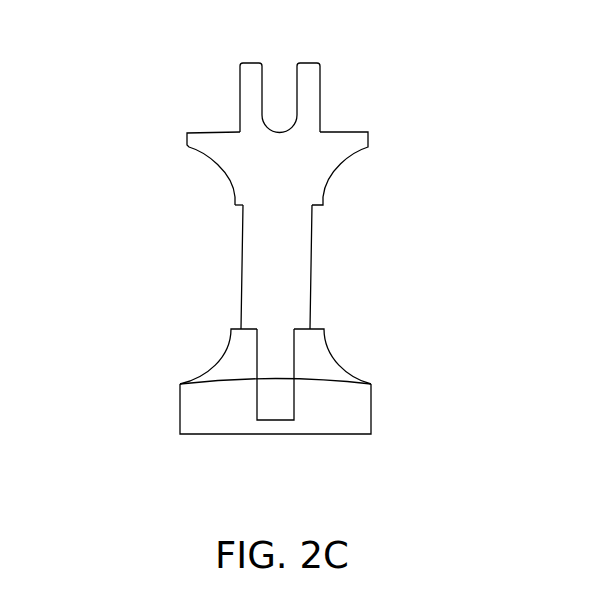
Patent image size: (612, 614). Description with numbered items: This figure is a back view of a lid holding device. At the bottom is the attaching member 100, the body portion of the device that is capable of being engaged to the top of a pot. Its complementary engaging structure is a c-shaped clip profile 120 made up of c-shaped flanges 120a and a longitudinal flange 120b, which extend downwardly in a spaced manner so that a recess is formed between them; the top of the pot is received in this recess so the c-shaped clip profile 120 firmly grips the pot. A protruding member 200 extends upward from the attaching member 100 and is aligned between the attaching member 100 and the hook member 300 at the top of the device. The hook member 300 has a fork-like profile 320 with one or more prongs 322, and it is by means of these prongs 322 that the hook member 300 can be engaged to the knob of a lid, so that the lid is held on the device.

The attaching member 100 is at (274, 417).
The c-shaped clip profile 120 is at (374, 423).
The c-shaped flanges 120a is at (345, 412).
The longitudinal flange 120b is at (273, 411).
The protruding member 200 is at (322, 262).
The hook member 300 is at (284, 111).
The fork-like profile 320 is at (284, 74).
The prongs 322 is at (237, 60).